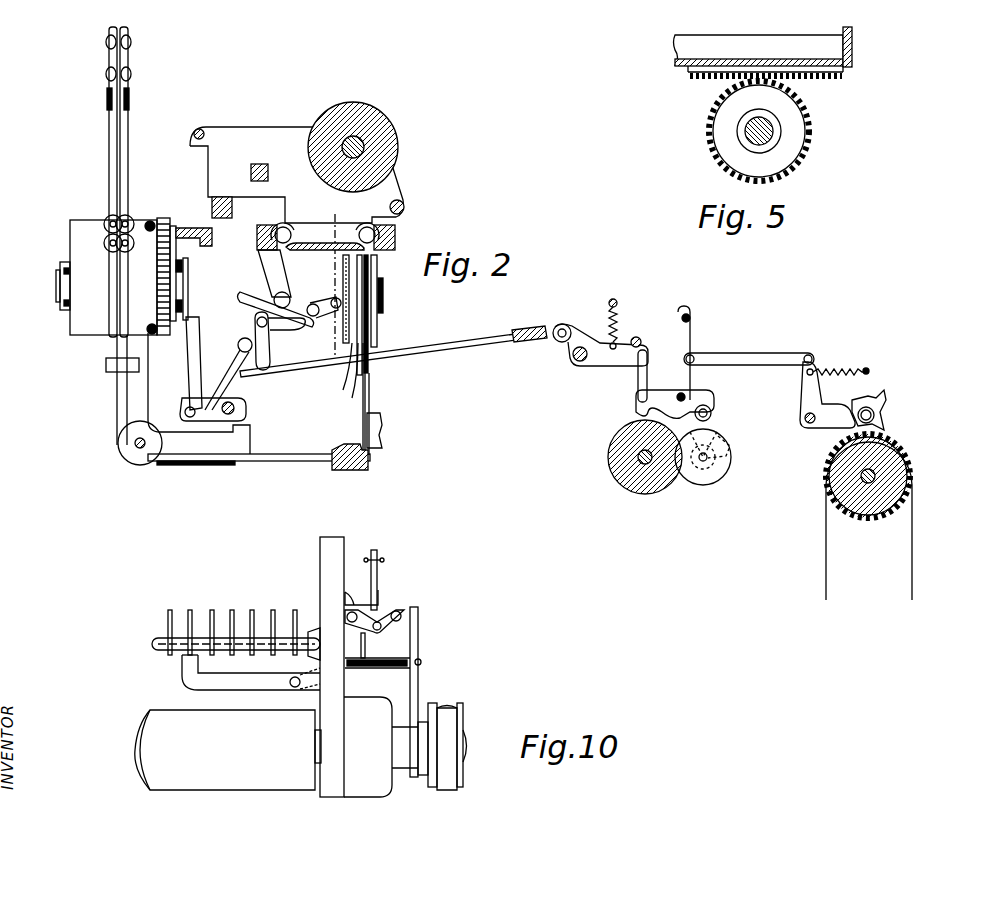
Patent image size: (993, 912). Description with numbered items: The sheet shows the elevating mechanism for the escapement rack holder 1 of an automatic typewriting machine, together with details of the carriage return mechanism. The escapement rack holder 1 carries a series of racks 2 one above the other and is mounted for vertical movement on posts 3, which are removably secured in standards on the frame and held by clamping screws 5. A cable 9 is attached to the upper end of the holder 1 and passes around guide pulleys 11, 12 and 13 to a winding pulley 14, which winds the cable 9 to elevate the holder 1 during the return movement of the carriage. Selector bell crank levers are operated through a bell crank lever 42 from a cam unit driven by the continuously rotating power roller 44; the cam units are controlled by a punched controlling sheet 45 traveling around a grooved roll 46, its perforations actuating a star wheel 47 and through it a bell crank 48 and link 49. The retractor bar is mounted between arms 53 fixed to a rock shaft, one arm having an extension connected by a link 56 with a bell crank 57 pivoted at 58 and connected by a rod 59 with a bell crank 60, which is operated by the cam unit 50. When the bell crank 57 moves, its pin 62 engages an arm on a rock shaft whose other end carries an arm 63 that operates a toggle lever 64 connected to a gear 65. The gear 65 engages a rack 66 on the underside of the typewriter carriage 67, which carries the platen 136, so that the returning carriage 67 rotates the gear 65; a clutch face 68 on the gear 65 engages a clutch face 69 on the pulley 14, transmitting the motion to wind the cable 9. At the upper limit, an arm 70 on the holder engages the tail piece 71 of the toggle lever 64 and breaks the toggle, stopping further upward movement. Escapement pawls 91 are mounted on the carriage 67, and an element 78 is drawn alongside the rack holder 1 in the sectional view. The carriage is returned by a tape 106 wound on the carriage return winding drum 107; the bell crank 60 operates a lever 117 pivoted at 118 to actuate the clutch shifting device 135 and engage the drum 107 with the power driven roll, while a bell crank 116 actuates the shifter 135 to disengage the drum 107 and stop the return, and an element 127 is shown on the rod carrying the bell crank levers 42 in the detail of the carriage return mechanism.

In FIG. 2, the escapement rack holder 1 is at (76, 234).
In FIG. 2, the racks 2 is at (174, 234).
In FIG. 2, the posts 3 is at (128, 133).
In FIG. 2, the clamping screws 5 is at (327, 230).
In FIG. 2, the cable 9 is at (370, 408).
In FIG. 2, the guide pulley 11 is at (130, 455).
In FIG. 2, the guide pulley 12 is at (370, 458).
In FIG. 2, the guide pulley 13 is at (382, 420).
In FIG. 2, the winding pulley 14 is at (372, 331).
In FIG. 10, the bell crank lever 42 is at (295, 612).
In FIG. 2, the power roller 44 is at (626, 484).
In FIG. 10, the power roller 44 is at (148, 736).
In FIG. 2, the punched controlling sheet 45 is at (914, 549).
In FIG. 2, the grooved roll 46 is at (868, 506).
In FIG. 2, the star wheel 47 is at (874, 408).
In FIG. 2, the bell crank 48 is at (800, 393).
In FIG. 2, the link 49 is at (741, 357).
In FIG. 2, the cam unit 50 is at (712, 470).
In FIG. 2, the arms 53 is at (60, 287).
In FIG. 2, the link 56 is at (198, 354).
In FIG. 2, the bell crank 57 is at (202, 406).
In FIG. 2, the pivot 58 is at (240, 408).
In FIG. 2, the rod 59 is at (472, 349).
In FIG. 2, the bell crank 60 is at (602, 359).
In FIG. 10, the bell crank 60 is at (191, 612).
In FIG. 2, the pin 62 is at (243, 338).
In FIG. 2, the arm 63 is at (292, 331).
In FIG. 2, the toggle lever 64 is at (296, 309).
In FIG. 2, the gear 65 is at (344, 329).
In FIG. 5, the gear 65 is at (713, 122).
In FIG. 2, the rack 66 is at (343, 258).
In FIG. 5, the rack 66 is at (816, 80).
In FIG. 2, the typewriter carriage 67 is at (265, 140).
In FIG. 5, the typewriter carriage 67 is at (853, 41).
In FIG. 2, the clutch face 68 is at (348, 362).
In FIG. 2, the clutch face 69 is at (357, 370).
In FIG. 2, the arm 70 is at (250, 433).
In FIG. 2, the tail piece 71 is at (262, 295).
In FIG. 2, the rack 78 is at (162, 218).
In FIG. 2, the escapement pawls 91 is at (200, 242).
In FIG. 10, the tape 106 is at (446, 707).
In FIG. 10, the carriage return winding drum 107 is at (461, 718).
In FIG. 10, the bell crank 116 is at (379, 580).
In FIG. 10, the lever 117 is at (182, 671).
In FIG. 10, the pivot 118 is at (291, 686).
In FIG. 10, the rod 127 is at (170, 612).
In FIG. 10, the clutch shifting device 135 is at (386, 628).
In FIG. 2, the platen 136 is at (392, 138).